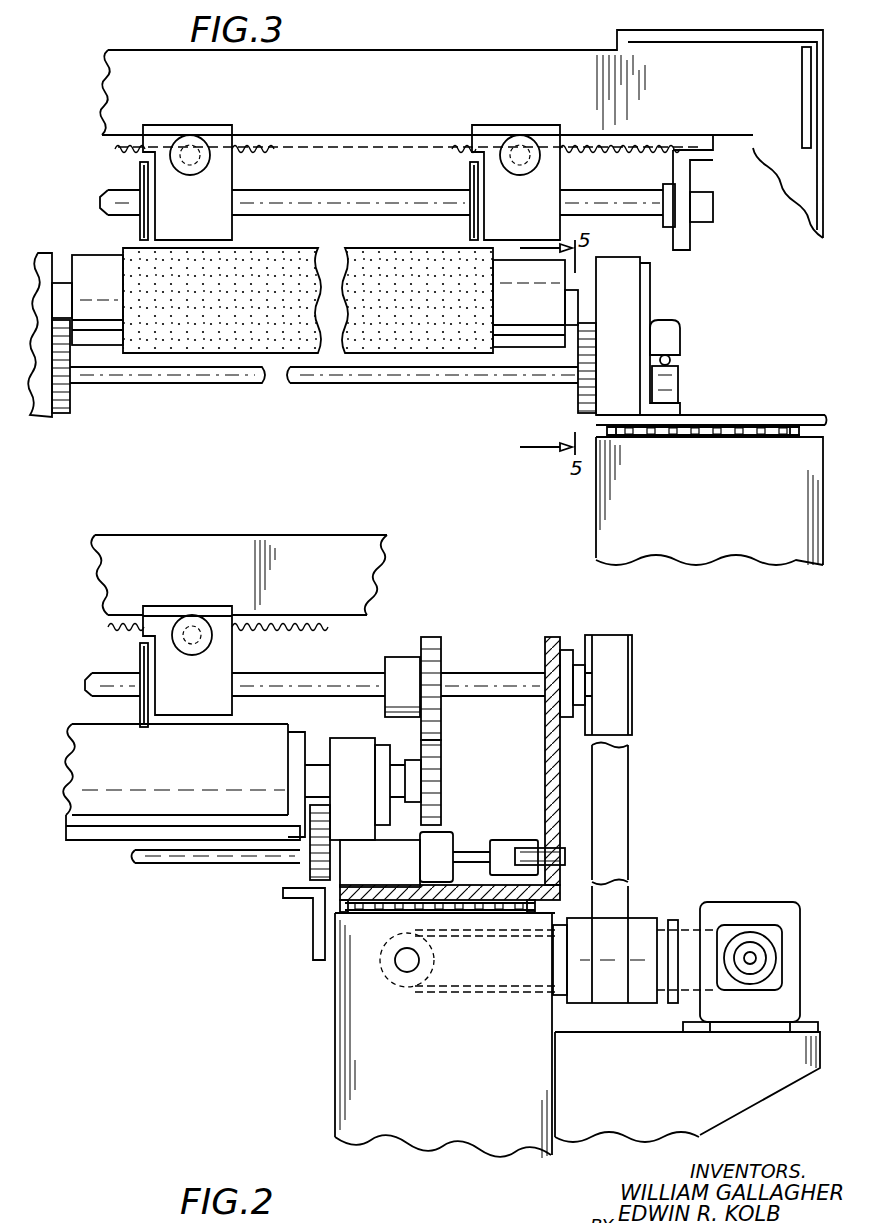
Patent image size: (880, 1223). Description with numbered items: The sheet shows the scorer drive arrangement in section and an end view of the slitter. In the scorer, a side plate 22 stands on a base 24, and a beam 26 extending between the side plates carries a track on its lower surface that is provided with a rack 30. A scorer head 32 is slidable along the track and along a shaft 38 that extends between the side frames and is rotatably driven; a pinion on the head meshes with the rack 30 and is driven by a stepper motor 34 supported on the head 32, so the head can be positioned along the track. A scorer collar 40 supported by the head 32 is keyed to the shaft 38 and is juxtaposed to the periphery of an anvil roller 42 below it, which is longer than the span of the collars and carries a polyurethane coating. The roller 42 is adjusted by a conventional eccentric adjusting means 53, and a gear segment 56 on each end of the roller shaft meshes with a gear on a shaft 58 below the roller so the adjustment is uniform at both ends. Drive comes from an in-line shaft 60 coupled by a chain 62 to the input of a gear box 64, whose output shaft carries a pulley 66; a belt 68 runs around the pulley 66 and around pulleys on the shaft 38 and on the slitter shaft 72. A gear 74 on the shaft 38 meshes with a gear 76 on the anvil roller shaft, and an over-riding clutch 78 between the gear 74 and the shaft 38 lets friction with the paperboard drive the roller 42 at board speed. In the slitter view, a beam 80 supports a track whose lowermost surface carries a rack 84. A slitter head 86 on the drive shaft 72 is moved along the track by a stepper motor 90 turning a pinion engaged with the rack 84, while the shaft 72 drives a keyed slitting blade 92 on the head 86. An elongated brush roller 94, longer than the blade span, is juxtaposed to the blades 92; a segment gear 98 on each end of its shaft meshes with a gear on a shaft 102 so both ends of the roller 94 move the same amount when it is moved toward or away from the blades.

In FIG. 3, the beam 80 is at (400, 92).
In FIG. 3, the rack 84 is at (274, 149).
In FIG. 3, the shaft 72 is at (416, 189).
In FIG. 3, the slitter head 86 is at (208, 212).
In FIG. 3, the stepper motor 90 is at (192, 135).
In FIG. 3, the slitting blade 92 is at (140, 166).
In FIG. 3, the roller 94 is at (277, 260).
In FIG. 3, the shaft 102 is at (400, 385).
In FIG. 3, the segment gear 98 is at (588, 348).
In FIG. 2, the beam 26 is at (317, 510).
In FIG. 2, the rack 30 is at (282, 628).
In FIG. 2, the scorer head 32 is at (202, 697).
In FIG. 2, the stepper motor 34 is at (186, 618).
In FIG. 2, the scorer collar 40 is at (140, 650).
In FIG. 2, the shaft 38 is at (86, 681).
In FIG. 2, the over-riding clutch 78 is at (393, 658).
In FIG. 2, the gear 74 is at (442, 640).
In FIG. 2, the gear 76 is at (442, 812).
In FIG. 2, the eccentric adjusting means 53 is at (359, 738).
In FIG. 2, the gear segment 56 is at (312, 838).
In FIG. 2, the anvil roller 42 is at (124, 767).
In FIG. 2, the shaft 58 is at (172, 864).
In FIG. 2, the side plate 22 is at (545, 772).
In FIG. 2, the base 24 is at (464, 1109).
In FIG. 2, the in-line shaft 60 is at (406, 966).
In FIG. 2, the chain 62 is at (456, 992).
In FIG. 2, the pulley 66 is at (646, 918).
In FIG. 2, the belt 68 is at (632, 762).
In FIG. 2, the gear box 64 is at (753, 904).